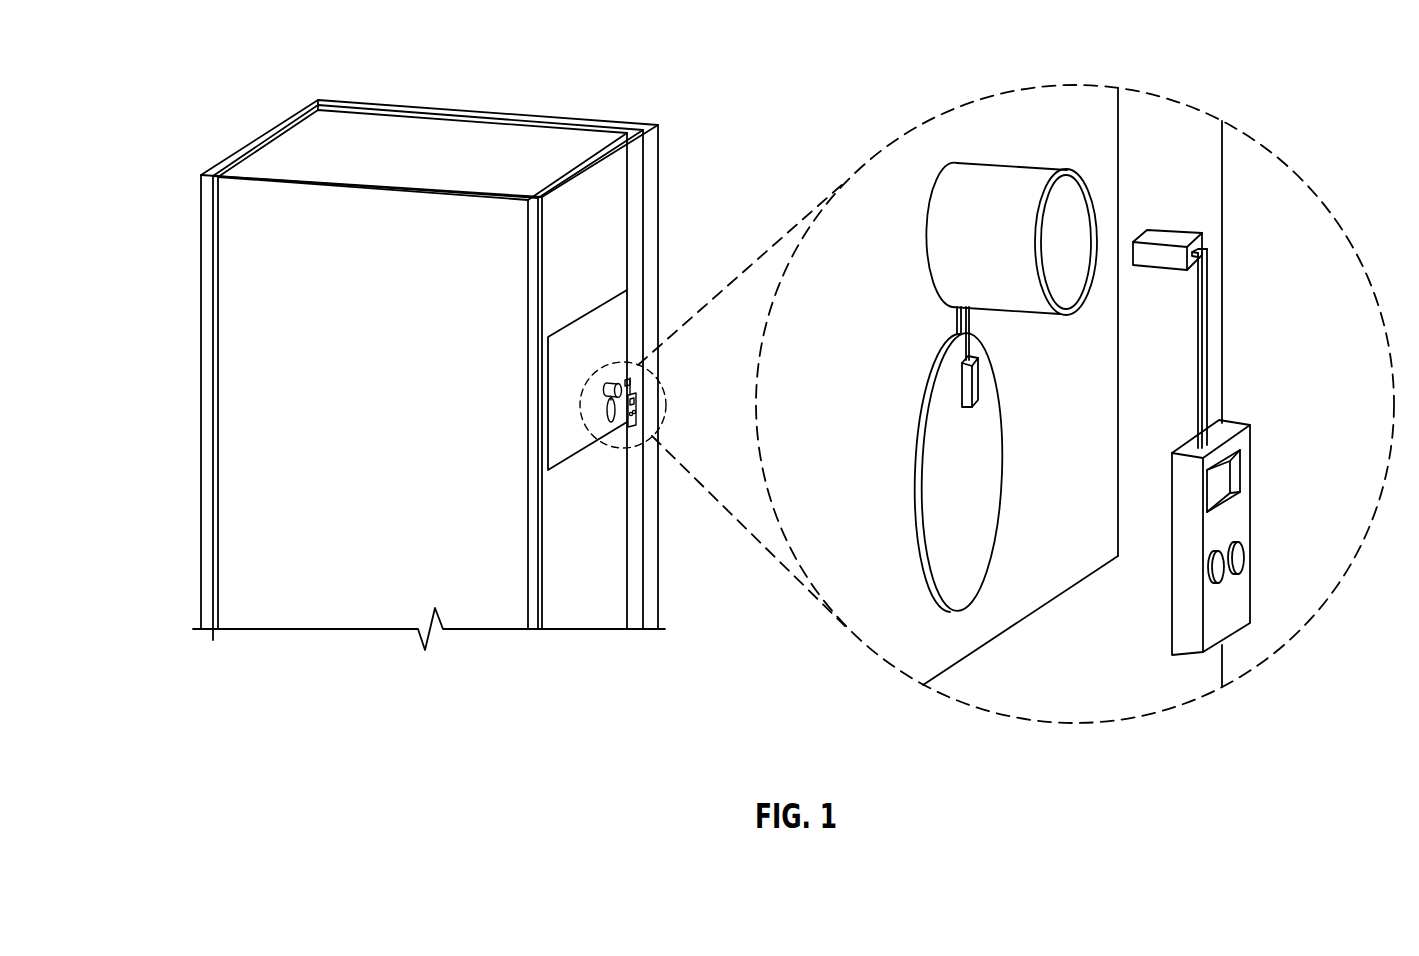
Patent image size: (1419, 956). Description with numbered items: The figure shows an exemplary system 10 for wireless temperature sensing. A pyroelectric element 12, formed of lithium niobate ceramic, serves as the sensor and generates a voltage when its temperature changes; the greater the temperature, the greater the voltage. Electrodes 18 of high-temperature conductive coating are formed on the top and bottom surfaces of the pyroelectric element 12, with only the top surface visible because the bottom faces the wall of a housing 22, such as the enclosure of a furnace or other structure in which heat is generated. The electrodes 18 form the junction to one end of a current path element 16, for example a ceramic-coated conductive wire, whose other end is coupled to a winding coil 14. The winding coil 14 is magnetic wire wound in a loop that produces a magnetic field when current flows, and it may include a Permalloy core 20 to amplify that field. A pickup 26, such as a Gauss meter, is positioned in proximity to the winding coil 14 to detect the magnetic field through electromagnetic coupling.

The system 10 is at (833, 94).
The pyroelectric element 12 is at (985, 507).
The winding coil 14 is at (1016, 264).
The current path element 16 is at (955, 322).
The electrode 18 is at (972, 382).
The core 20 is at (1060, 297).
The housing 22 is at (268, 140).
The pickup 26 is at (1210, 348).